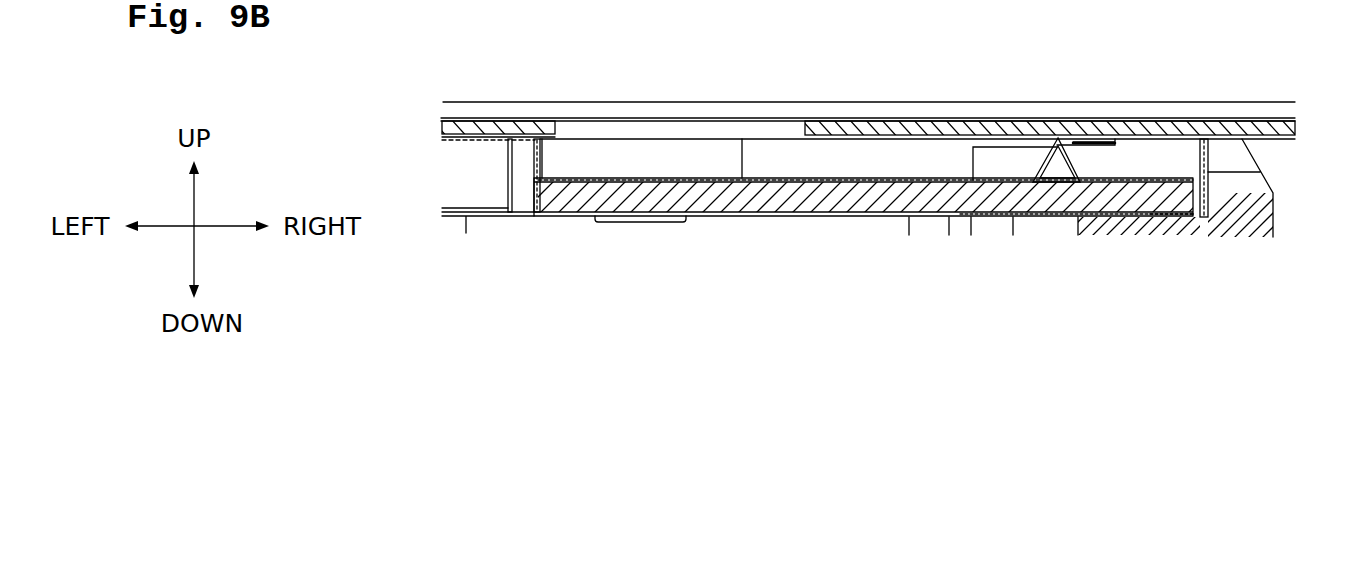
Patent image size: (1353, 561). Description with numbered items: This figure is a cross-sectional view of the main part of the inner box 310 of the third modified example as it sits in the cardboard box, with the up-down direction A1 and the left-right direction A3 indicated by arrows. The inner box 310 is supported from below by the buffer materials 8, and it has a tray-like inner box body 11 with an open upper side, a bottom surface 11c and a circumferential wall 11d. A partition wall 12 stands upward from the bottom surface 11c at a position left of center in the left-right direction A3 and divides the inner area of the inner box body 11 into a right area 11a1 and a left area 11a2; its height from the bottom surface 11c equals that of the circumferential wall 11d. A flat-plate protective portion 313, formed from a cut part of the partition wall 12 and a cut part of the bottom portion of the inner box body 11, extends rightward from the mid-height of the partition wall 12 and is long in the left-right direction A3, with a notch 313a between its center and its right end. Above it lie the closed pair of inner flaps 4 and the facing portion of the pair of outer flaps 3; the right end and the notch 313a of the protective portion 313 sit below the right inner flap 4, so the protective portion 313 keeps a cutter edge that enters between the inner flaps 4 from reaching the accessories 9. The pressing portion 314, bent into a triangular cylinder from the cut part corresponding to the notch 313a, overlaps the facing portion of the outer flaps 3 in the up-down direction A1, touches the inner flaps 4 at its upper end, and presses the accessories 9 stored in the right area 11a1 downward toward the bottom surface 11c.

The outer flaps 3 is at (975, 117).
The inner flaps 4 is at (460, 128).
The buffer materials 8 is at (1242, 218).
The accessories 9 is at (1092, 203).
The inner box body 11 is at (634, 243).
The right area 11a1 is at (1168, 157).
The left area 11a2 is at (467, 192).
The bottom surface 11c is at (1167, 193).
The circumferential wall 11d is at (1207, 167).
The partition wall 12 is at (540, 164).
The inner box 310 is at (674, 146).
The protective portion 313 is at (778, 185).
The notch 313a is at (970, 182).
The pressing portion 314 is at (1056, 124).
The up-down direction A1 is at (195, 197).
The left-right direction A3 is at (168, 227).